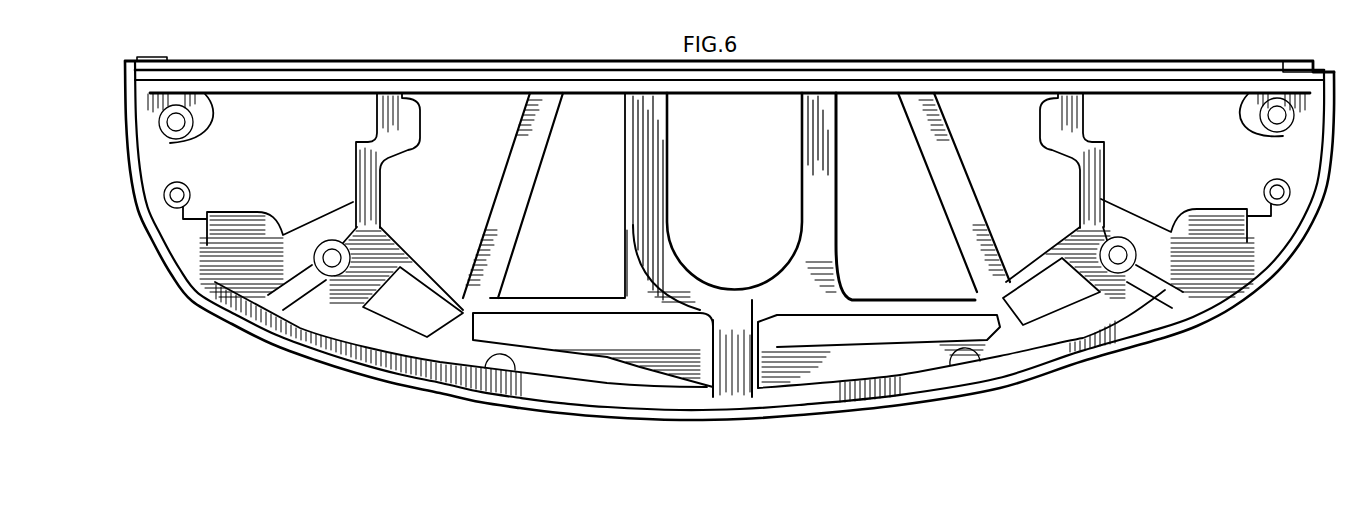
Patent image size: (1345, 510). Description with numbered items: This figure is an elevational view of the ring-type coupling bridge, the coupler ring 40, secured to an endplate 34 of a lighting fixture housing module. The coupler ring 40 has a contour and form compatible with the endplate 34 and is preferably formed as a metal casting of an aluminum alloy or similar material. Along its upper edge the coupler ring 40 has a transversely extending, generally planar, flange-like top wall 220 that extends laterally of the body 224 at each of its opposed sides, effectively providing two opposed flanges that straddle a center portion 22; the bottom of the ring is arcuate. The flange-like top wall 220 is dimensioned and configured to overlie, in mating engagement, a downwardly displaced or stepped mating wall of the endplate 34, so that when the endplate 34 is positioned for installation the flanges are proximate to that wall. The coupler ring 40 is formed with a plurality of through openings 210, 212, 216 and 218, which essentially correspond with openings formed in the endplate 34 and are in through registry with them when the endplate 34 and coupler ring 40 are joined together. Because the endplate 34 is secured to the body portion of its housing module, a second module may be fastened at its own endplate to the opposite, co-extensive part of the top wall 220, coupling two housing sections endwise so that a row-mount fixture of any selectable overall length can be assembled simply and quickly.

The center portion 22 is at (1122, 67).
The endplate 34 is at (377, 332).
The coupler ring 40 is at (247, 327).
The through opening 210 is at (587, 133).
The through opening 212 is at (463, 117).
The through opening 216 is at (260, 120).
The through opening 218 is at (758, 132).
The flange-like top wall 220 is at (373, 80).
The body 224 is at (618, 247).